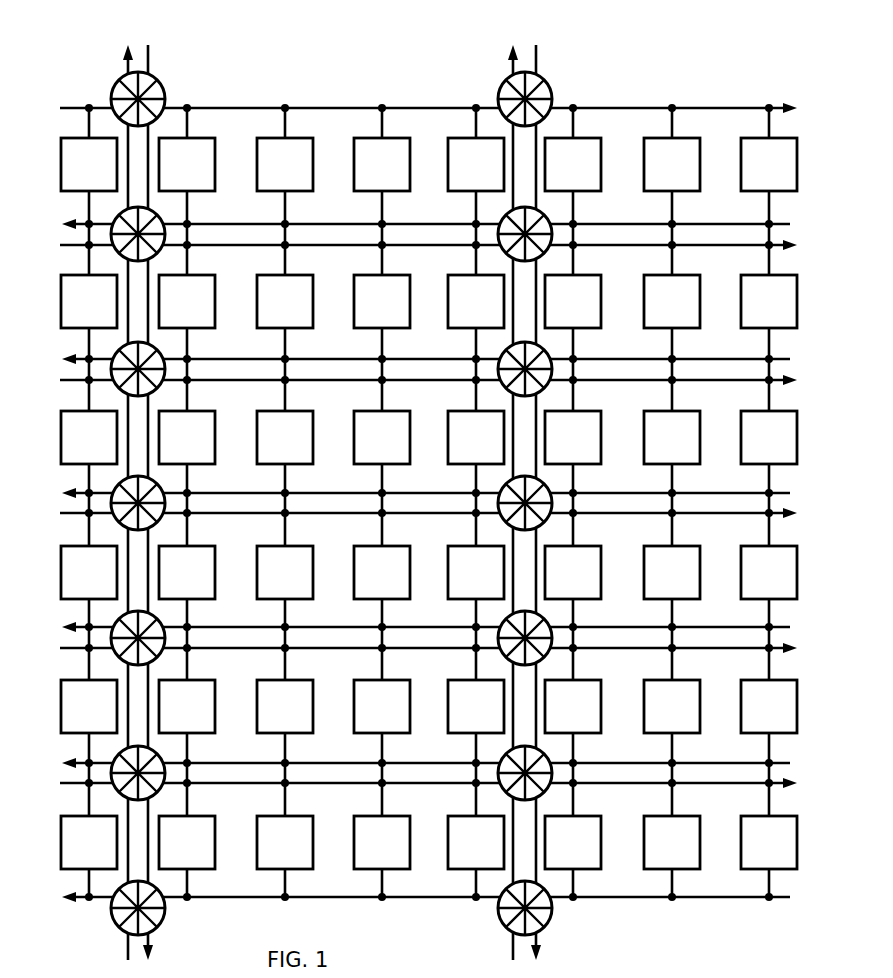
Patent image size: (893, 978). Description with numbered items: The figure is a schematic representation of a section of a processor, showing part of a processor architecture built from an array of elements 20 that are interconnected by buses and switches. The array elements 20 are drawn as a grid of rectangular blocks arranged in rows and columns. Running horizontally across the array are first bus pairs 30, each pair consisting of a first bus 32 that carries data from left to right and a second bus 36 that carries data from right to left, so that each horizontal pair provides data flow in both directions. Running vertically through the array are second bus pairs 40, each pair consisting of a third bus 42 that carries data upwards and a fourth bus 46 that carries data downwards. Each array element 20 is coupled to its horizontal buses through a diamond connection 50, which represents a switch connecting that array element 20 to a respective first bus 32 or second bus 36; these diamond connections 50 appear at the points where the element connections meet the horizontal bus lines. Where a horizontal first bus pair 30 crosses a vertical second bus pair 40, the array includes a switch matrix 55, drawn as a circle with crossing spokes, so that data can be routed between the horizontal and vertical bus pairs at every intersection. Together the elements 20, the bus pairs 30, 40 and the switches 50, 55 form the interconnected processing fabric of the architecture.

The array element 20 is at (213, 136).
The first bus pair 30 is at (427, 487).
The first bus 32 is at (800, 248).
The second bus 36 is at (790, 224).
The second bus pair 40 is at (123, 45).
The third bus 42 is at (124, 940).
The fourth bus 46 is at (152, 940).
The diamond connection 50 is at (573, 106).
The switch matrix 55 is at (162, 80).